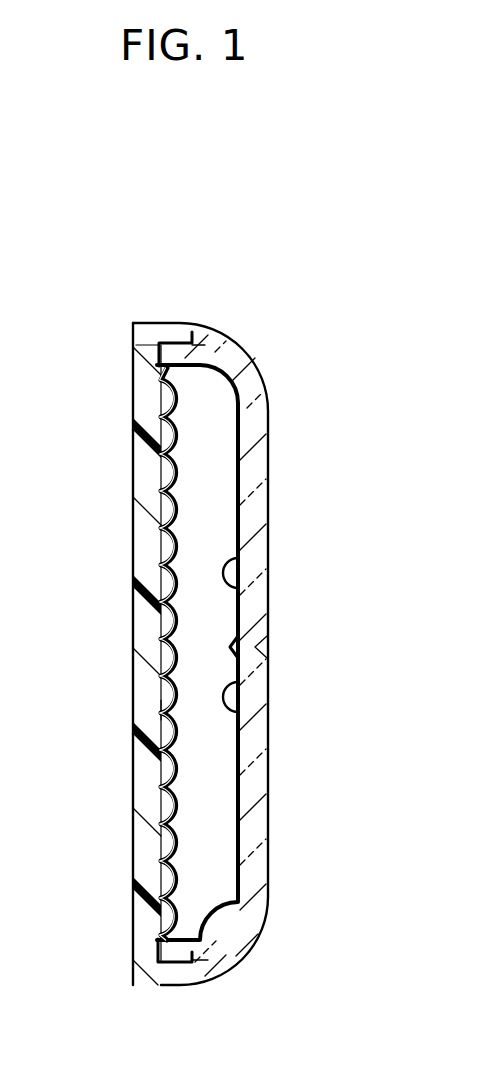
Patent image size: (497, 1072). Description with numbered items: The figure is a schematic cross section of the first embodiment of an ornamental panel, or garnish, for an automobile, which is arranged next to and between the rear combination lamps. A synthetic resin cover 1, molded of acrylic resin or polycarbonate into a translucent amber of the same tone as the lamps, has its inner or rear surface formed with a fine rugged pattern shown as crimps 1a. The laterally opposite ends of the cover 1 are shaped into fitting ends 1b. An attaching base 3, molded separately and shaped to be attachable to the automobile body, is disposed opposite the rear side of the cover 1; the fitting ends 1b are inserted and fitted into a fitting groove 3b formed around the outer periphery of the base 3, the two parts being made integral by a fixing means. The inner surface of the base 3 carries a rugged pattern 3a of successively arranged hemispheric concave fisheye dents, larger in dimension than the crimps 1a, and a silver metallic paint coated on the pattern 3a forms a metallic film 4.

The synthetic resin cover 1 is at (268, 497).
The crimps 1a is at (248, 668).
The fitting ends 1b is at (205, 345).
The attaching base 3 is at (133, 633).
The rugged pattern 3a is at (176, 690).
The fitting groove 3b is at (170, 345).
The metallic film 4 is at (165, 815).